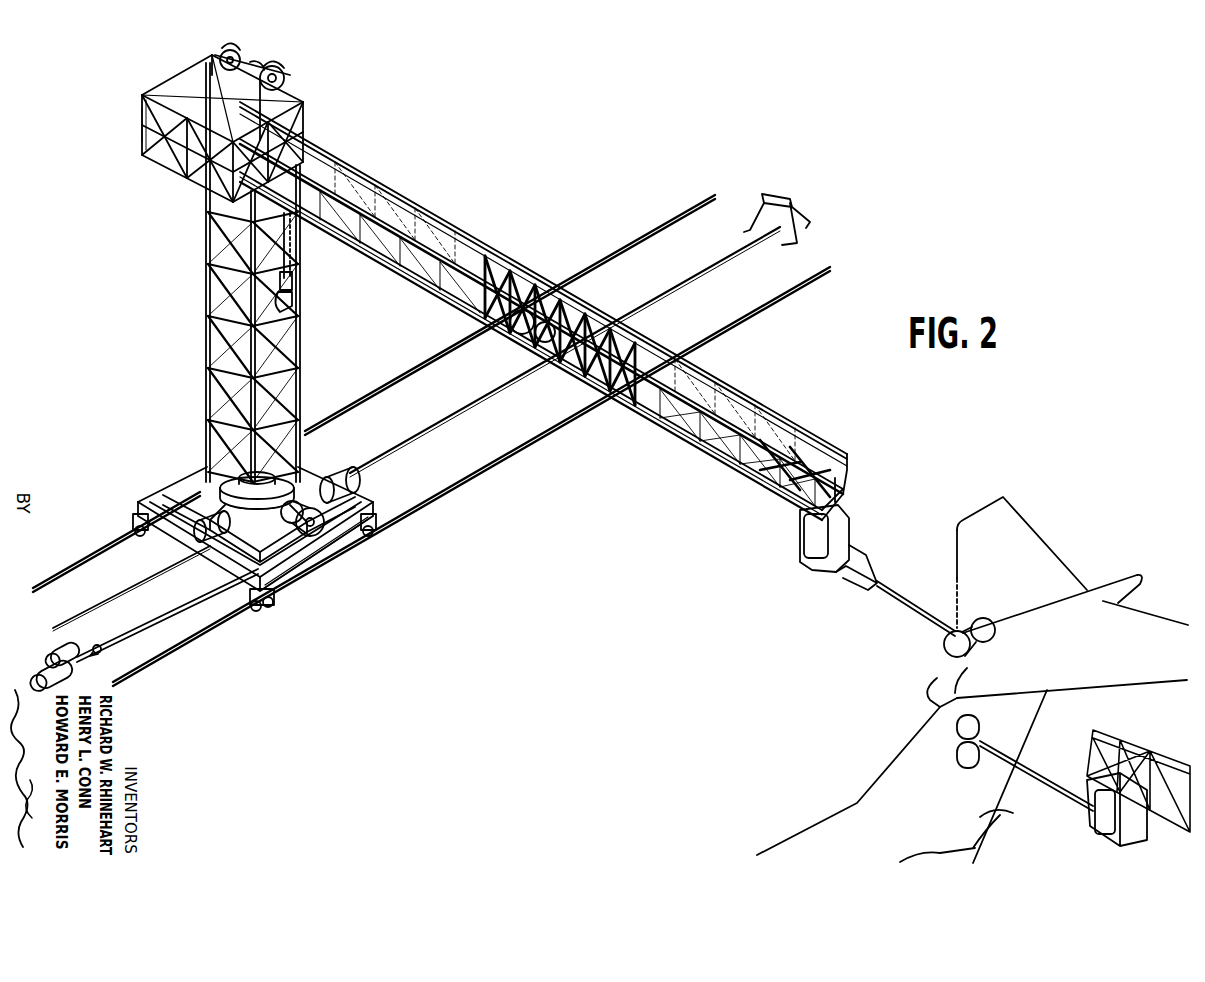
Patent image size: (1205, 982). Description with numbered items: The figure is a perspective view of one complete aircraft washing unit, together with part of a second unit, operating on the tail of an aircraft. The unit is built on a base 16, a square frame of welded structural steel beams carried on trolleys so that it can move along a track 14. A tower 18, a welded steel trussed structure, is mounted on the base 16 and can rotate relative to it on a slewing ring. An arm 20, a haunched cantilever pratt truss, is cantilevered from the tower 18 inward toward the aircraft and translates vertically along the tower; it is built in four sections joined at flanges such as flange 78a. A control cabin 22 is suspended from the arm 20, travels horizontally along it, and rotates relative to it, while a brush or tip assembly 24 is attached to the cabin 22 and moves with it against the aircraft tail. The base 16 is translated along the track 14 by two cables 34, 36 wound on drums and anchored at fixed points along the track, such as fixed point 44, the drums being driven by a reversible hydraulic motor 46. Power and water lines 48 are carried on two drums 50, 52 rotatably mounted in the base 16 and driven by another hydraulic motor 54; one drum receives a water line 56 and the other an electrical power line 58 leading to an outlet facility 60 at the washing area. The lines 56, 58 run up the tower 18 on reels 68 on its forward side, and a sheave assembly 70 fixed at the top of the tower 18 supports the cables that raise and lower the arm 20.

The track 14 is at (675, 218).
The base 16 is at (155, 544).
The tower 18 is at (314, 354).
The arm 20 is at (466, 233).
The control cabin 22 is at (864, 536).
The brush or tip assembly 24 is at (891, 612).
The cable 34 is at (142, 580).
The cable 36 is at (418, 436).
The fixed point 44 is at (800, 220).
The hydraulic motor 46 is at (213, 563).
The power and water lines 48 is at (98, 645).
The drum 50 is at (318, 557).
The drum 52 is at (332, 478).
The hydraulic motor 54 is at (362, 502).
The water line 56 is at (291, 277).
The electrical power line 58 is at (292, 253).
The outlet facility 60 is at (58, 655).
The reels 68 is at (293, 306).
The sheave assembly 70 is at (288, 76).
The flange 78a is at (602, 322).